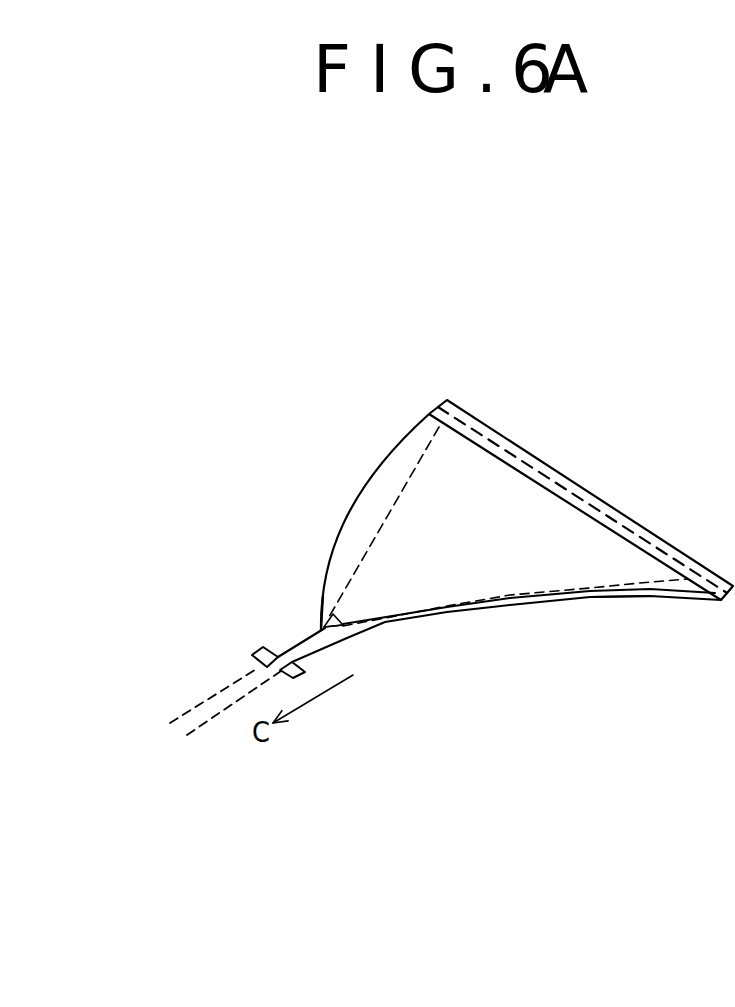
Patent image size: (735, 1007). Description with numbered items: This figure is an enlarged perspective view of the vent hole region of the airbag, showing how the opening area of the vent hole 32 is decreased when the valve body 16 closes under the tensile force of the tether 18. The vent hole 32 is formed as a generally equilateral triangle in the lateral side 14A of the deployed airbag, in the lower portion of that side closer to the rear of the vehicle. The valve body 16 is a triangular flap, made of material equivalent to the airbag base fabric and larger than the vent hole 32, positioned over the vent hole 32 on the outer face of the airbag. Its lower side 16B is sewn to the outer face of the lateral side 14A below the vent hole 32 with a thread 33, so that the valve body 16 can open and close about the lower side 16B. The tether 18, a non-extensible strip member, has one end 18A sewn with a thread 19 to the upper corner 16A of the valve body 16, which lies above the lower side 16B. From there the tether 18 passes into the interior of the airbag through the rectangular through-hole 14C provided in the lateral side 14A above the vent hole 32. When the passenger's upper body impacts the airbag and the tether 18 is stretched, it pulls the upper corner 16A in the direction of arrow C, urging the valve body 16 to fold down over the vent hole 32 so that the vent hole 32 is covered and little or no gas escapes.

The lateral side 14A is at (645, 680).
The through-hole 14C is at (267, 654).
The valve body 16 is at (355, 508).
The upper corner 16A is at (319, 632).
The lower side 16B is at (555, 468).
The tether 18 is at (220, 683).
The end of tether 18A is at (344, 625).
The thread 19 is at (328, 614).
The vent hole 32 is at (505, 603).
The thread 33 is at (640, 532).